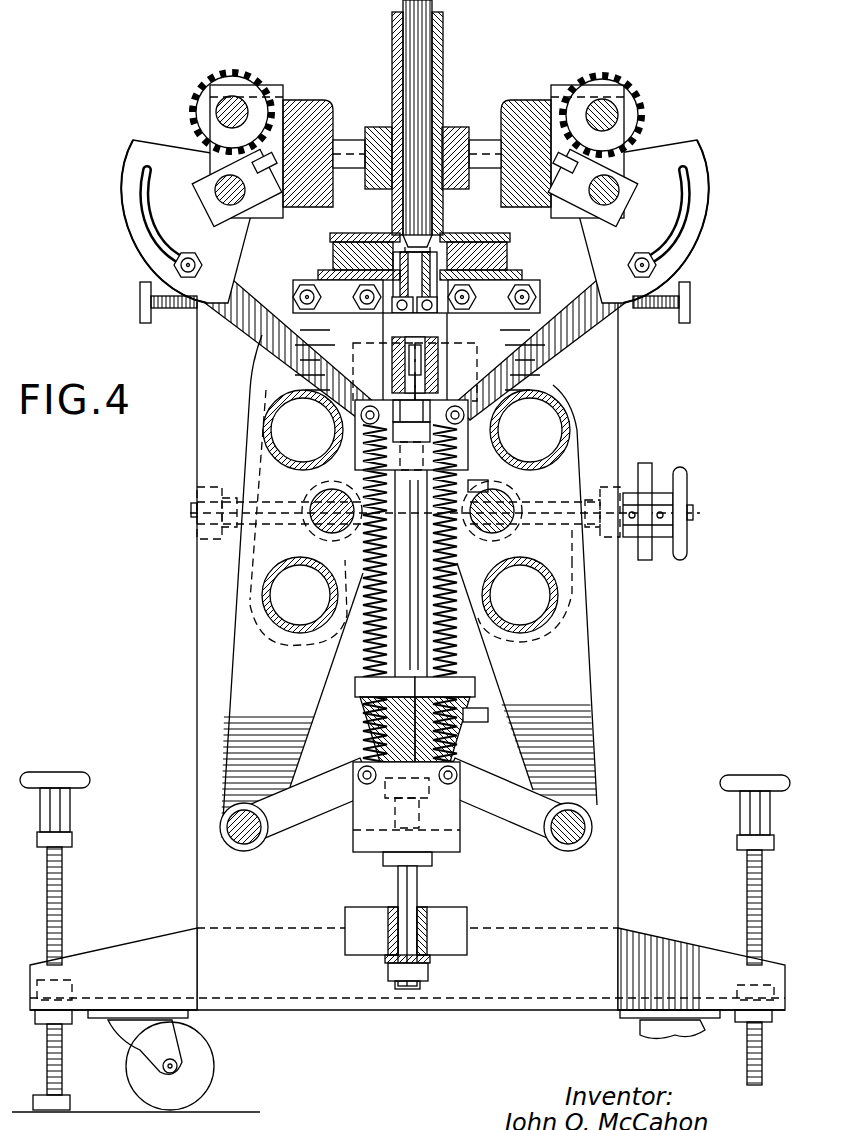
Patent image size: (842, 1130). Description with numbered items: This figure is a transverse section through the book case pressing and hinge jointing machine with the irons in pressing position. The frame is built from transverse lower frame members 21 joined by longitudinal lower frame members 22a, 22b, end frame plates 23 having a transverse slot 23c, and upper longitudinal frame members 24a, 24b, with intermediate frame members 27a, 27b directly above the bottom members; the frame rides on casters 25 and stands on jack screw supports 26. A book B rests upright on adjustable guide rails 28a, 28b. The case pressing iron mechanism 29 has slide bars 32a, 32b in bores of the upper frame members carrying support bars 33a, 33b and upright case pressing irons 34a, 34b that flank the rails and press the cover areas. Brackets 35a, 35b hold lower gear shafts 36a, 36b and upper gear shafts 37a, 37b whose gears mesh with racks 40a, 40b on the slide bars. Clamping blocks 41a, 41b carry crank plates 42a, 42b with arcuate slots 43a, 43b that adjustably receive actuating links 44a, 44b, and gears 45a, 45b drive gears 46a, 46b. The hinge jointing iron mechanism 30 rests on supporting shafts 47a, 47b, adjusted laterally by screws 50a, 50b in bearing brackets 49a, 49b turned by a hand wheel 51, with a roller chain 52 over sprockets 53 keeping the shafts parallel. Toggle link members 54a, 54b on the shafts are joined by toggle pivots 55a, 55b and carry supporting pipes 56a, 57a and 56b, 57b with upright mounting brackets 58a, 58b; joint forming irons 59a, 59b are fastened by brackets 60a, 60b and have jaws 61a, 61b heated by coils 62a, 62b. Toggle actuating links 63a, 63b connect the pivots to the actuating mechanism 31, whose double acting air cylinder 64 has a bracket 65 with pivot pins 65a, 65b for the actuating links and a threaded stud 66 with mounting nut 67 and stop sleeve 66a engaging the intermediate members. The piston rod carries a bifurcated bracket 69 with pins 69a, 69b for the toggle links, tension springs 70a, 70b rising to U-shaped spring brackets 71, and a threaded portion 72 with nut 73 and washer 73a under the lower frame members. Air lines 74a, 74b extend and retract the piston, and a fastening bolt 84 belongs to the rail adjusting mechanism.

The book B is at (400, 32).
The transverse lower frame member 21 is at (685, 948).
The longitudinal lower frame member 22a is at (392, 907).
The longitudinal lower frame member 22b is at (430, 907).
The end frame plate 23 is at (620, 760).
The transverse slot 23c is at (420, 352).
The upper longitudinal frame member 24a is at (310, 110).
The upper longitudinal frame member 24b is at (510, 105).
The caster 25 is at (212, 1052).
The jack screw support 26 is at (65, 772).
The longitudinal intermediate frame member 27a is at (392, 362).
The longitudinal intermediate frame member 27b is at (440, 380).
The book supporting guide rail 28a is at (395, 240).
The book supporting guide rail 28b is at (437, 240).
The case pressing iron mechanism 29 is at (468, 72).
The hinge jointing iron mechanism 30 is at (292, 282).
The hydraulic actuating mechanism 31 is at (337, 855).
The transverse slide bar 32a is at (348, 140).
The transverse slide bar 32b is at (480, 138).
The presser iron support bar 33a is at (376, 190).
The presser iron support bar 33b is at (465, 140).
The case pressing iron 34a is at (392, 60).
The case pressing iron 34b is at (445, 35).
The bracket 35a is at (275, 88).
The bracket 35b is at (572, 88).
The lower gear shaft 36a is at (222, 195).
The lower gear shaft 36b is at (613, 200).
The upper gear shaft 37a is at (232, 112).
The upper gear shaft 37b is at (610, 110).
The gear rack 40a is at (180, 150).
The gear rack 40b is at (628, 155).
The clamping block 41a is at (215, 172).
The clamping block 41b is at (595, 180).
The actuating crank plate 42a is at (133, 160).
The actuating crank plate 42b is at (700, 150).
The arcuate slot 43a is at (152, 222).
The arcuate slot 43b is at (690, 205).
The actuating link 44a is at (262, 345).
The actuating link 44b is at (560, 340).
The gear 45a is at (248, 232).
The gear 45b is at (532, 232).
The gear 46a is at (210, 78).
The gear 46b is at (605, 75).
The longitudinal supporting shaft 47a is at (320, 503).
The longitudinal supporting shaft 47b is at (492, 533).
The fixed bearing bracket 49a is at (205, 487).
The fixed bearing bracket 49b is at (618, 487).
The left hand threaded adjusting screw 50a is at (192, 512).
The right hand threaded adjusting screw 50b is at (694, 515).
The hand wheel 51 is at (690, 478).
The roller chain 52 is at (648, 560).
The sprocket 53 is at (645, 468).
The toggle link member 54a is at (245, 640).
The toggle link member 54b is at (590, 665).
The toggle pivot 55a is at (244, 845).
The toggle pivot 55b is at (566, 845).
The upper supporting pipe 56a is at (265, 425).
The upper supporting pipe 56b is at (548, 412).
The lower supporting pipe 57a is at (302, 633).
The lower supporting pipe 57b is at (520, 633).
The upright mounting bracket 58a is at (250, 587).
The upright mounting bracket 58b is at (572, 598).
The joint forming iron 59a is at (333, 262).
The joint forming iron 59b is at (500, 265).
The fastening bracket 60a is at (300, 290).
The fastening bracket 60b is at (520, 290).
The joint forming jaw 61a is at (335, 238).
The joint forming jaw 61b is at (470, 240).
The electric heating coil 62a is at (330, 245).
The electric heating coil 62b is at (470, 248).
The toggle actuating link 63a is at (340, 778).
The toggle actuating link 63b is at (470, 822).
The double acting air cylinder 64 is at (410, 596).
The bracket 65 is at (362, 455).
The pivot pin 65a is at (360, 412).
The pivot pin 65b is at (478, 425).
The threaded stud 66 is at (440, 335).
The stop sleeve 66a is at (395, 425).
The mounting nut 67 is at (400, 312).
The bifurcated bracket 69 is at (352, 850).
The pin 69a is at (355, 795).
The pin 69b is at (457, 775).
The tension spring 70a is at (365, 672).
The tension spring 70b is at (445, 670).
The U-shaped spring bracket 71 is at (397, 378).
The threaded portion of piston rod 72 is at (418, 882).
The nut 73 is at (390, 975).
The washer 73a is at (430, 958).
The air supply line 74a is at (488, 488).
The air supply line 74b is at (470, 722).
The fastening bolt 84 is at (425, 312).